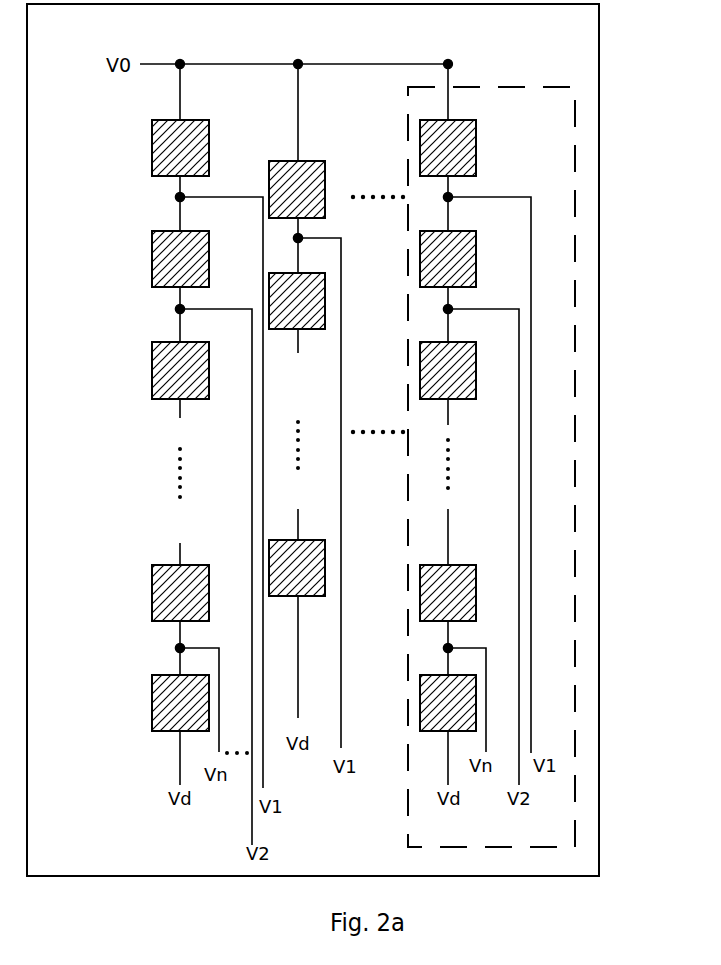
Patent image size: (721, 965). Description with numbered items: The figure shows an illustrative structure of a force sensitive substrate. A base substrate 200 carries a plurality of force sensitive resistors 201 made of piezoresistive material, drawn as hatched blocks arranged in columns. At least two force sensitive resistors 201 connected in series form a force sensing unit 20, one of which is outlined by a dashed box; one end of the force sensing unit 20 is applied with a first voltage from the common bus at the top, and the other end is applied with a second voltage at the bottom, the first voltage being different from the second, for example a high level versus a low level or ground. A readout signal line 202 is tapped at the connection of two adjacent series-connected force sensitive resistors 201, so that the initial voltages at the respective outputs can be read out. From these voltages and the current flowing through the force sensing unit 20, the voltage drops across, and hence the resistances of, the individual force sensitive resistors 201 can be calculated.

The base substrate 200 is at (599, 30).
The force sensing unit 20 is at (575, 93).
The force sensitive resistor 201 is at (166, 245).
The readout signal line 202 is at (531, 250).